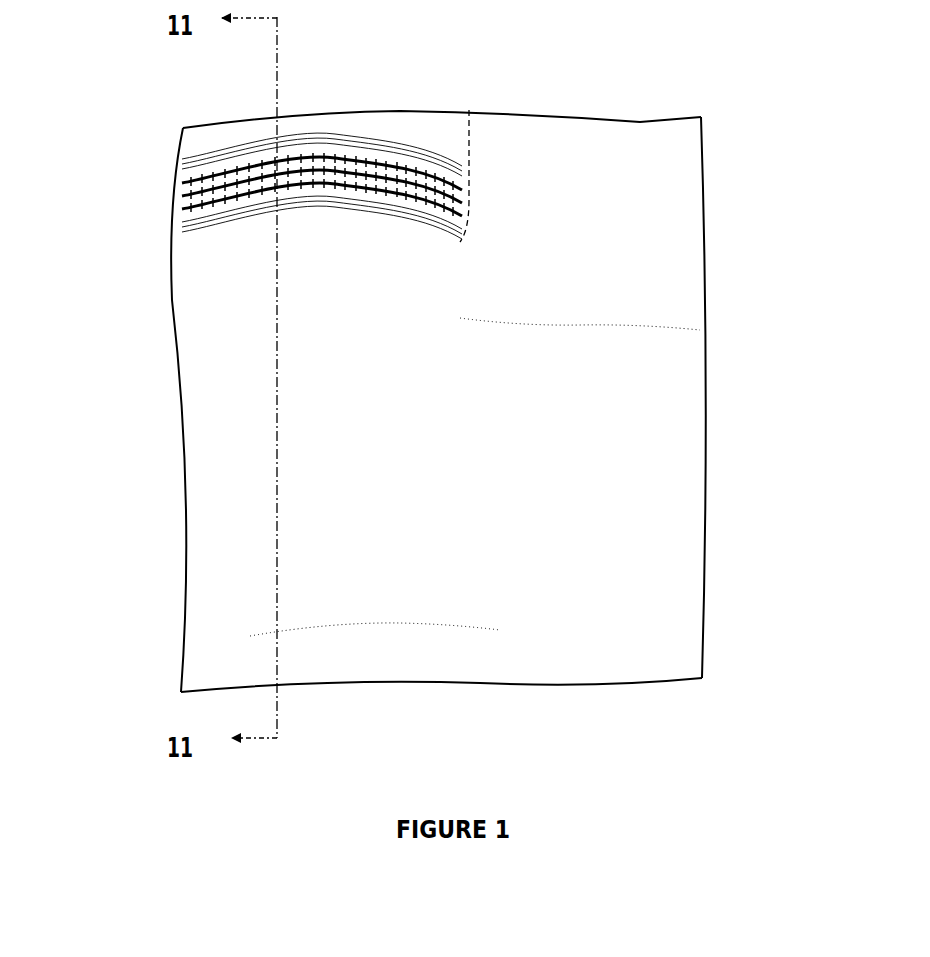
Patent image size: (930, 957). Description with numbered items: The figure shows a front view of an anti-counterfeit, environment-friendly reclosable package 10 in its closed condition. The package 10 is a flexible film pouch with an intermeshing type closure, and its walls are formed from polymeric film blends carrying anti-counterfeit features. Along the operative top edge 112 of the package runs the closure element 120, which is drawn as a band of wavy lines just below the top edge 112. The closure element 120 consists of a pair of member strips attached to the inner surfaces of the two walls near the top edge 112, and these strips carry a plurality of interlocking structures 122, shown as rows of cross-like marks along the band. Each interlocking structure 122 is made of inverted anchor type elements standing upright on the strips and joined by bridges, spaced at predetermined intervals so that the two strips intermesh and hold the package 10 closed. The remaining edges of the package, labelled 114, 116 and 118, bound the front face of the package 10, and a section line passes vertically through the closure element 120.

The package 10 is at (422, 389).
The operative top edge 112 is at (612, 118).
The bottom edge of panel 114 is at (396, 683).
The right side edge of panel 116 is at (710, 304).
The left side edge of panel 118 is at (170, 310).
The closure element 120 is at (328, 127).
The interlocking structures 122 is at (401, 170).